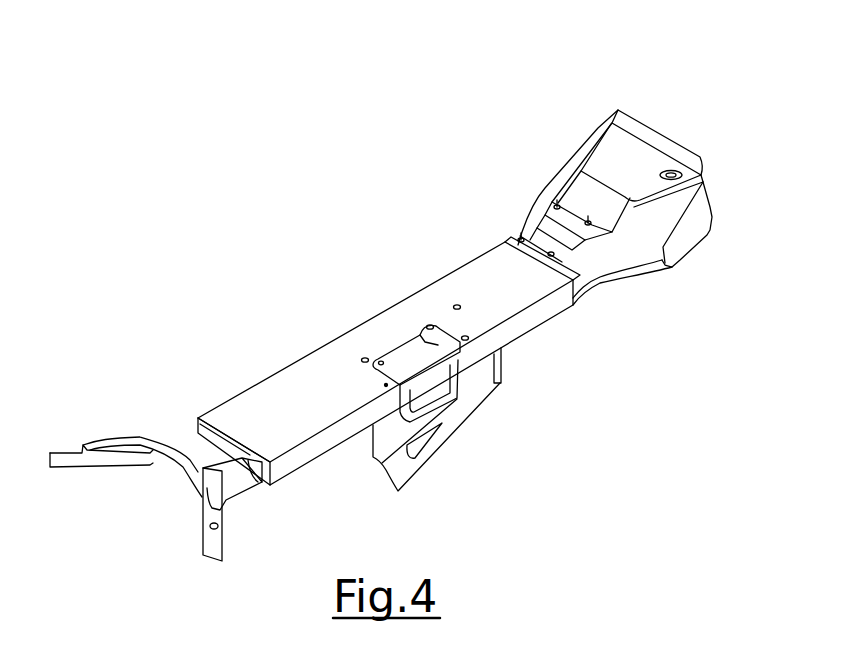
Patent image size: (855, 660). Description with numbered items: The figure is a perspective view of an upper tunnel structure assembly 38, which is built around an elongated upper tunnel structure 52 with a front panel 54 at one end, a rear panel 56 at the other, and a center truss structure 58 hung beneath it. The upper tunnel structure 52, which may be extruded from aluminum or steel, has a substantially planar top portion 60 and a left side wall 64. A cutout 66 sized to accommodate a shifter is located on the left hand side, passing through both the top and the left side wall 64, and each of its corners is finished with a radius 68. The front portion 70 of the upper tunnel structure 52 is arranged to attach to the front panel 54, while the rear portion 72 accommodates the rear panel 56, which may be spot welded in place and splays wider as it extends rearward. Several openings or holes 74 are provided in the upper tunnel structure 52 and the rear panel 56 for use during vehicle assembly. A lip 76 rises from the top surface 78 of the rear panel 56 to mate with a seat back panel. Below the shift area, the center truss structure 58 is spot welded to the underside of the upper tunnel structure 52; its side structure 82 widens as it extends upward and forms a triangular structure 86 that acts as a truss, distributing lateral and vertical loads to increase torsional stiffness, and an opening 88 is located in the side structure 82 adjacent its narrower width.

The upper tunnel structure assembly 38 is at (717, 105).
The upper tunnel structure 52 is at (290, 380).
The front panel 54 is at (182, 446).
The rear panel 56 is at (601, 139).
The center truss structure 58 is at (468, 371).
The top portion 60 is at (394, 315).
The left side wall 64 is at (530, 320).
The cutout 66 is at (440, 344).
The radius 68 is at (428, 328).
The front portion 70 is at (220, 413).
The rear portion 72 is at (547, 277).
The openings or holes 74 is at (218, 525).
The lip 76 is at (645, 137).
The top surface 78 is at (643, 164).
The side structure 82 is at (445, 438).
The triangular structure 86 is at (467, 423).
The opening 88 is at (417, 447).